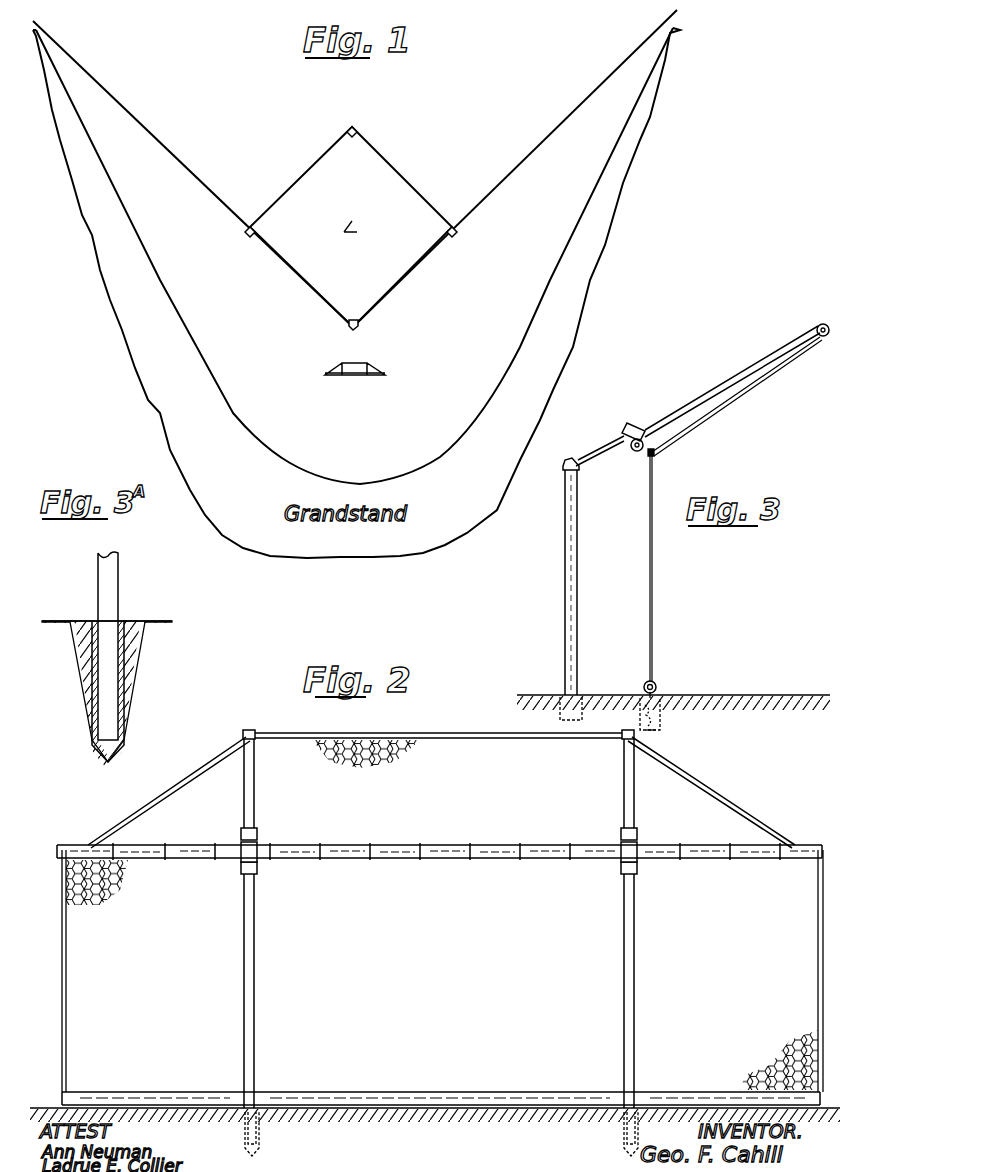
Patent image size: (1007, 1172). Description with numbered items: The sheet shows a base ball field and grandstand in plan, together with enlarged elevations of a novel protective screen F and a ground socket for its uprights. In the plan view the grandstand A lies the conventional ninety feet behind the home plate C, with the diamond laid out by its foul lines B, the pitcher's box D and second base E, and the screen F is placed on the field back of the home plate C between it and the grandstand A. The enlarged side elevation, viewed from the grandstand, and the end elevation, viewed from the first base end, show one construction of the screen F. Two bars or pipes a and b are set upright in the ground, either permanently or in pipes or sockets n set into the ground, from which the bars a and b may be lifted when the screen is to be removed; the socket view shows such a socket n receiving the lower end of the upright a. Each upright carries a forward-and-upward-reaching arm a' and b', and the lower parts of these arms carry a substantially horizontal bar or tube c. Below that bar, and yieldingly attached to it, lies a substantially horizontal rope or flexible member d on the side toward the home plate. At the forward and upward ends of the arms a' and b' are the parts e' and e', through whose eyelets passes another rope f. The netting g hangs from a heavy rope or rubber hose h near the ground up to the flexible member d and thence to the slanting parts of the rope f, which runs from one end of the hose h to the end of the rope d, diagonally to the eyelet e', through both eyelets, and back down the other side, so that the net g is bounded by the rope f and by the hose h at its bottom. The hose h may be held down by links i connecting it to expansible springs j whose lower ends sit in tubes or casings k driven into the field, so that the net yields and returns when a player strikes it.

In FIG. 1, the grandstand A is at (175, 343).
In FIG. 1, the second base B is at (308, 173).
In FIG. 1, the home plate C is at (357, 318).
In FIG. 1, the pitcher's box D is at (361, 219).
In FIG. 1, the second base E is at (358, 128).
In FIG. 1, the protective screen F is at (348, 377).
In FIG. 2, the protective screen F is at (452, 972).
In FIG. 3A, the bar or pipe a is at (125, 646).
In FIG. 2, the bar or pipe a is at (265, 999).
In FIG. 2, the forward-and-upward-reaching arm a' is at (267, 789).
In FIG. 3, the bar or pipe b is at (592, 578).
In FIG. 2, the bar or pipe b is at (643, 999).
In FIG. 3, the forward-and-upward-reaching arm b' is at (732, 381).
In FIG. 2, the forward-and-upward-reaching arm b' is at (647, 789).
In FIG. 3, the horizontal bar or tube c is at (630, 453).
In FIG. 3, the horizontal rope or flexible member d is at (658, 456).
In FIG. 2, the horizontal rope or flexible member d is at (395, 862).
In FIG. 2, the top corner fitting e is at (435, 719).
In FIG. 3, the eyelet part e' is at (812, 308).
In FIG. 2, the eyelet part e' is at (606, 747).
In FIG. 3, the rope f is at (735, 405).
In FIG. 2, the rope f is at (460, 732).
In FIG. 2, the netting g is at (360, 758).
In FIG. 3, the heavy rope or rubber hose h is at (656, 682).
In FIG. 2, the heavy rope or rubber hose h is at (320, 1090).
In FIG. 3, the link i is at (656, 690).
In FIG. 3, the expansible spring j is at (662, 715).
In FIG. 3, the tube or casing k is at (660, 732).
In FIG. 3A, the pipe or socket n is at (128, 660).
In FIG. 2, the pipe or socket n is at (262, 1138).